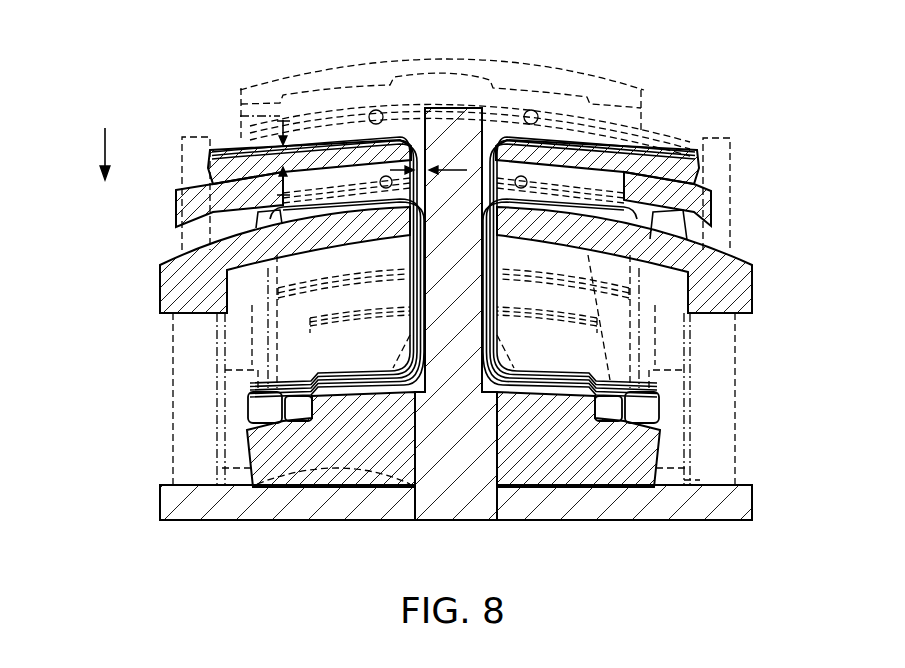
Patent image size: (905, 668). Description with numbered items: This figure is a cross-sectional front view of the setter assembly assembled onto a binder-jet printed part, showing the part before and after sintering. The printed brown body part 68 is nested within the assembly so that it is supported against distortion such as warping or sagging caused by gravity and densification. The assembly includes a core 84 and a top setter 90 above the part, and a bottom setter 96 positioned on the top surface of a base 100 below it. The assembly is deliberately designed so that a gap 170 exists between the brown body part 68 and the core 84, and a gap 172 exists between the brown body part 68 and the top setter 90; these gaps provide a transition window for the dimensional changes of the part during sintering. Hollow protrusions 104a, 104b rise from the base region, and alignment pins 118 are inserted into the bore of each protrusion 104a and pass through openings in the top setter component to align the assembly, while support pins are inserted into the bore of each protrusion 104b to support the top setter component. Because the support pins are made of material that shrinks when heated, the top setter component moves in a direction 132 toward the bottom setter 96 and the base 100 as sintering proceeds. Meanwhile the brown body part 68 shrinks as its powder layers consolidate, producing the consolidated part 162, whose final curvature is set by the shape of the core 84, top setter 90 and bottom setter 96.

The brown body part 68 is at (688, 146).
The core 84 is at (490, 62).
The top setter 90 is at (176, 208).
The bottom setter 96 is at (247, 452).
The base 100 is at (160, 500).
The protrusion 104a is at (736, 388).
The protrusion 104b is at (690, 447).
The alignment pins 118 is at (735, 170).
The direction 132 is at (100, 143).
The consolidated part 162 is at (677, 199).
The gap 170 is at (468, 166).
The gap 172 is at (283, 122).